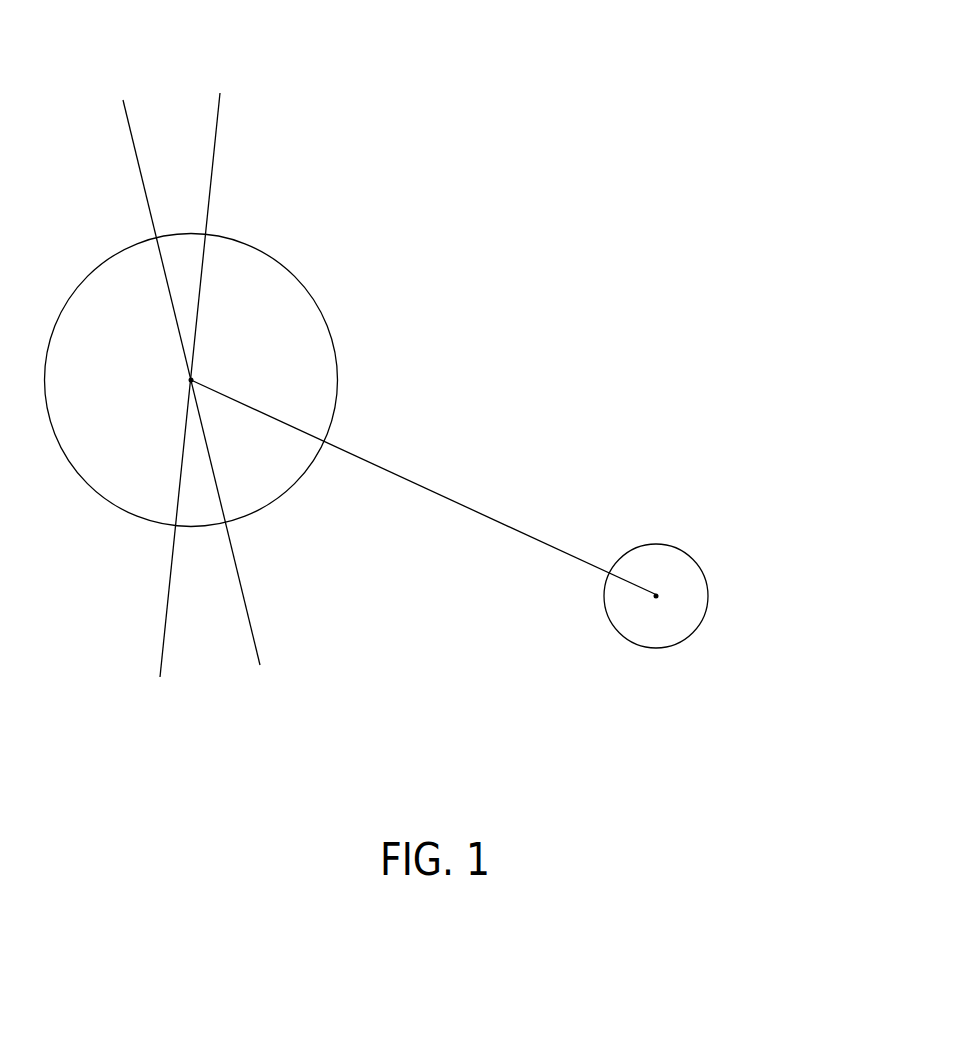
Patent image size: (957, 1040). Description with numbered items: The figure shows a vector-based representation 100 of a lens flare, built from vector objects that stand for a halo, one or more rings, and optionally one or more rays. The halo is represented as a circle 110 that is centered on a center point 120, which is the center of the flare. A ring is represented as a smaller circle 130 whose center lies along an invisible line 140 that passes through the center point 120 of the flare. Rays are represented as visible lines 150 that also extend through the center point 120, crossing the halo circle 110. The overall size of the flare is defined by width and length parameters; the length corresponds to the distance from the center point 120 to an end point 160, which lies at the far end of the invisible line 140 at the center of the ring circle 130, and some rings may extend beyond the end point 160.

The vector-based representation 100 is at (508, 122).
The circle 110 is at (247, 243).
The center point 120 is at (192, 380).
The circle 130 is at (698, 561).
The invisible line 140 is at (493, 518).
The visible line 150 is at (218, 110).
The end point 160 is at (657, 595).